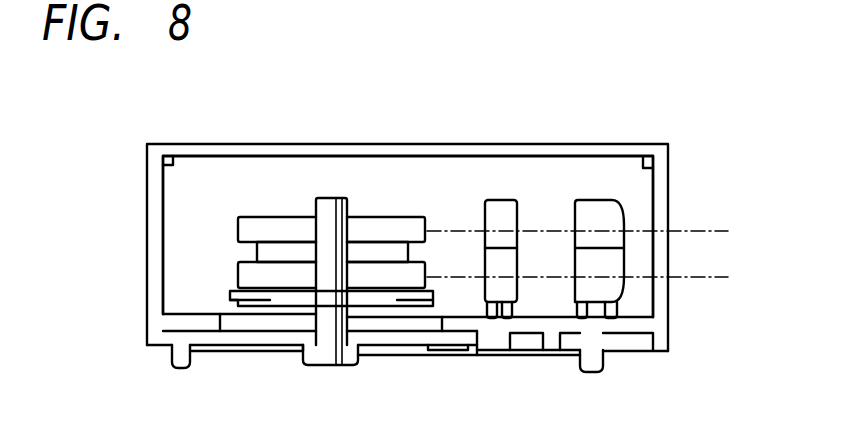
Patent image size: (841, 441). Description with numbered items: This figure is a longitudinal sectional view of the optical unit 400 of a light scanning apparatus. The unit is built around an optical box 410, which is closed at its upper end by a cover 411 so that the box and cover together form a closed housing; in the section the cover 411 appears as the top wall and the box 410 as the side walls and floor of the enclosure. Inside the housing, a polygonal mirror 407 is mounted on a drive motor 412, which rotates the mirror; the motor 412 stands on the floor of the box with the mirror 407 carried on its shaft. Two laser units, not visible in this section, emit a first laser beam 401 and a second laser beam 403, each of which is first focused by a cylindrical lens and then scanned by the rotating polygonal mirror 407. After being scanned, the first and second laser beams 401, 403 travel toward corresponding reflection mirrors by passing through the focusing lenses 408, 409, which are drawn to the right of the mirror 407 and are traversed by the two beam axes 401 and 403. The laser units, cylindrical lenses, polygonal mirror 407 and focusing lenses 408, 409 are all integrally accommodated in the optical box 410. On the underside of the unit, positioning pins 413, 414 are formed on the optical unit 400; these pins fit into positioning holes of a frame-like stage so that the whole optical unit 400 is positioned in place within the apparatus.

The optical unit 400 is at (147, 181).
The first laser beam 401 is at (704, 278).
The second laser beam 403 is at (700, 231).
The polygonal mirror 407 is at (248, 249).
The focusing lens 408 is at (497, 200).
The focusing lens 409 is at (600, 200).
The optical box 410 is at (163, 313).
The cover 411 is at (164, 143).
The drive motor 412 is at (249, 312).
The positioning pin 413 is at (172, 364).
The positioning pin 414 is at (580, 368).